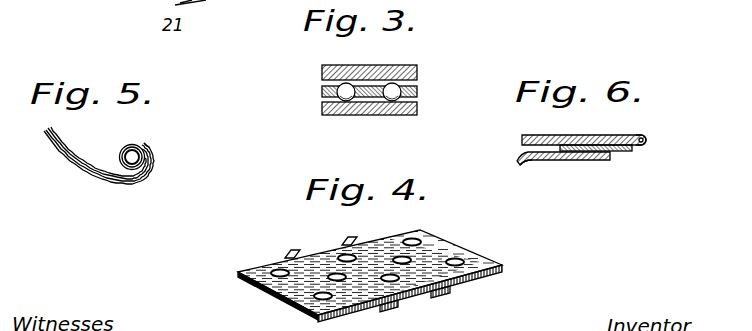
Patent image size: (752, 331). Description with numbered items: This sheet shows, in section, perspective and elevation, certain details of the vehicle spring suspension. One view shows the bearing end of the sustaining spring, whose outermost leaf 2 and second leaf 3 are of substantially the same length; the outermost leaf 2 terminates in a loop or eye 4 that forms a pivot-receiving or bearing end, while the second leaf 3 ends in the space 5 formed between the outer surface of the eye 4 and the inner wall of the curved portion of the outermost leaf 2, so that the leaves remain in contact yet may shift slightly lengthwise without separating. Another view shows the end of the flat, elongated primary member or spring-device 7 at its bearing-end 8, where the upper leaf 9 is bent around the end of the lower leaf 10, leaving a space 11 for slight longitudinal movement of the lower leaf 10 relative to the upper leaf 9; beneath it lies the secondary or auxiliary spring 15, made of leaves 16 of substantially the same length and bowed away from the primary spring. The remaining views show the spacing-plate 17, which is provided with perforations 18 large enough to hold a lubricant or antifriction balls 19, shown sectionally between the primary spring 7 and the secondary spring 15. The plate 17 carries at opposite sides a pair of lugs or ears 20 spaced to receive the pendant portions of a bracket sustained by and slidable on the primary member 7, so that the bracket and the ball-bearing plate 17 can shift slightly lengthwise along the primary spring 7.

In FIG. 5, the outermost leaf 2 is at (146, 158).
In FIG. 5, the second leaf 3 is at (89, 170).
In FIG. 5, the loop or eye 4 is at (150, 148).
In FIG. 5, the space 5 is at (147, 167).
In FIG. 3, the primary member or spring-device 7 is at (417, 78).
In FIG. 6, the bearing-end 8 is at (584, 131).
In FIG. 6, the upper leaf 9 is at (628, 137).
In FIG. 6, the lower leaf 10 is at (626, 150).
In FIG. 6, the space 11 is at (648, 140).
In FIG. 3, the secondary or auxiliary spring 15 is at (322, 108).
In FIG. 6, the secondary or auxiliary spring 15 is at (579, 160).
In FIG. 6, the leaves 16 is at (526, 163).
In FIG. 3, the spacing-plate 17 is at (417, 90).
In FIG. 4, the spacing-plate 17 is at (440, 245).
In FIG. 4, the perforations 18 is at (316, 298).
In FIG. 3, the balls 19 is at (388, 102).
In FIG. 4, the lugs or ears 20 is at (345, 242).